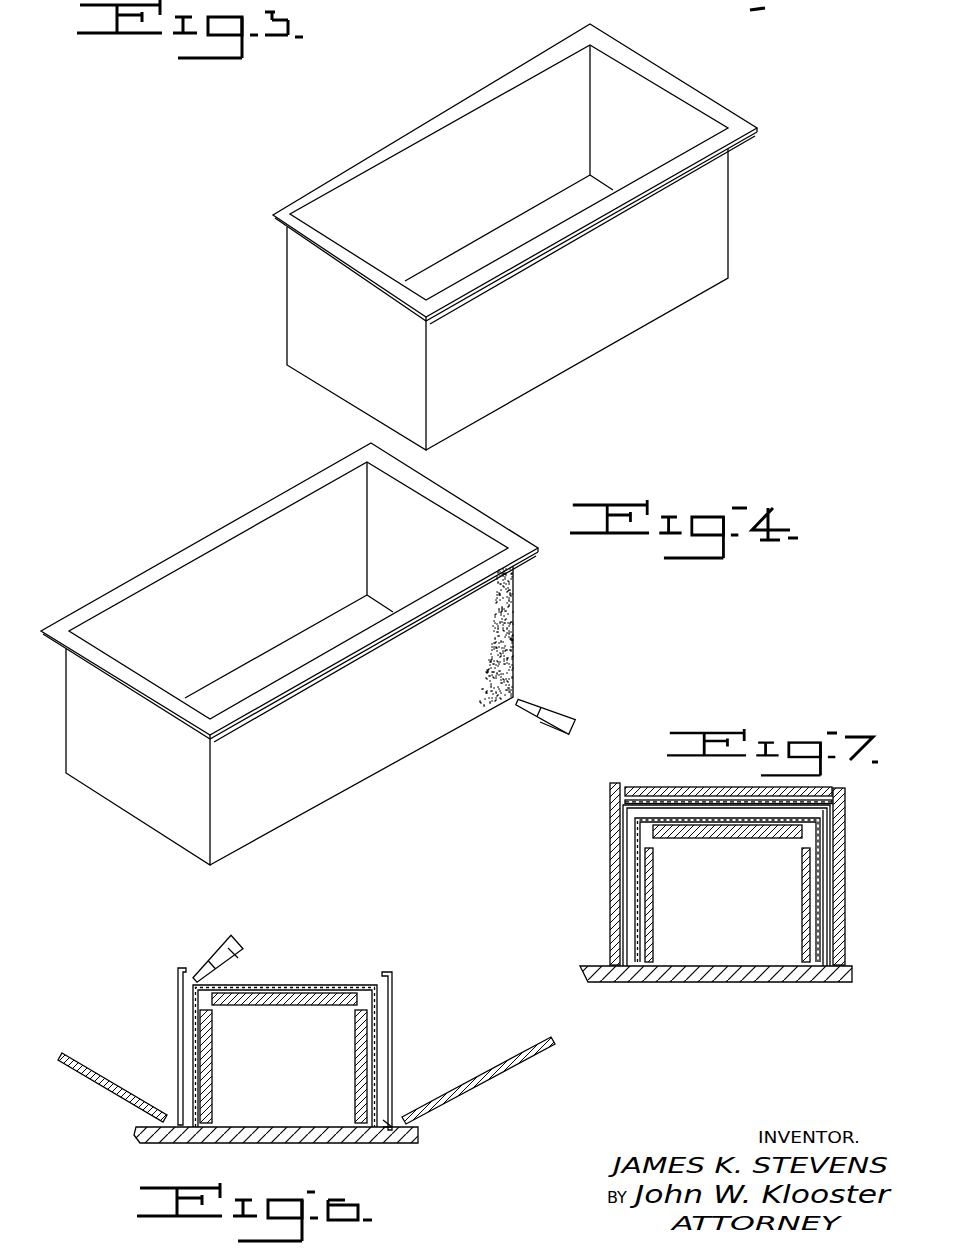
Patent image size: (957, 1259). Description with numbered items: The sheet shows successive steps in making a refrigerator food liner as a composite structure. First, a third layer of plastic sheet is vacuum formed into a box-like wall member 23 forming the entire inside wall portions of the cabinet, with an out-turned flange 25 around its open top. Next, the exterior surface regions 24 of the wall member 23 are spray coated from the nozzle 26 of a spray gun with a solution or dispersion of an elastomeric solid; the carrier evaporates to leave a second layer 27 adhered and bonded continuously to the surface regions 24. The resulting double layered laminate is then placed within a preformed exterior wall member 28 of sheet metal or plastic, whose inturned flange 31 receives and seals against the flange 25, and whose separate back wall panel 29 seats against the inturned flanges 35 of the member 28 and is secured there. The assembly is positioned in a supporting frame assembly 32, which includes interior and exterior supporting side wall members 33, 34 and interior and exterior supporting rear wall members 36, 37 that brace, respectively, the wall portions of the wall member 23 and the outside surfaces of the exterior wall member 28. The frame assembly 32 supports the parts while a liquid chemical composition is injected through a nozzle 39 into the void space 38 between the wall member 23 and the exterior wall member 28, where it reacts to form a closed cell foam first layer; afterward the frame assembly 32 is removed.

In FIG. 3, the wall member 23 is at (500, 237).
In FIG. 4, the wall member 23 is at (307, 670).
In FIG. 7, the wall member 23 is at (653, 837).
In FIG. 6, the wall member 23 is at (210, 1005).
In FIG. 3, the exterior surface regions 24 is at (308, 296).
In FIG. 4, the exterior surface regions 24 is at (260, 829).
In FIG. 3, the out-turned flange 25 is at (272, 219).
In FIG. 4, the nozzle 26 is at (562, 711).
In FIG. 4, the second layer 27 is at (510, 633).
In FIG. 7, the exterior wall member 28 is at (842, 830).
In FIG. 6, the exterior wall member 28 is at (286, 1025).
In FIG. 7, the back wall panel 29 is at (712, 770).
In FIG. 6, the inturned flange 31 is at (387, 1118).
In FIG. 7, the supporting frame assembly 32 is at (727, 983).
In FIG. 6, the supporting frame assembly 32 is at (345, 1145).
In FIG. 7, the interior supporting side wall members 33 is at (655, 927).
In FIG. 6, the interior supporting side wall members 33 is at (212, 1077).
In FIG. 7, the exterior supporting side wall members 34 is at (610, 880).
In FIG. 6, the exterior supporting side wall members 34 is at (105, 1083).
In FIG. 6, the inturned flanges 35 is at (386, 970).
In FIG. 7, the interior supporting rear wall member 36 is at (747, 837).
In FIG. 6, the interior supporting rear wall member 36 is at (307, 1005).
In FIG. 7, the exterior supporting rear wall member 37 is at (643, 785).
In FIG. 7, the void space 38 is at (823, 927).
In FIG. 6, the void space 38 is at (186, 1045).
In FIG. 6, the nozzle 39 is at (209, 947).